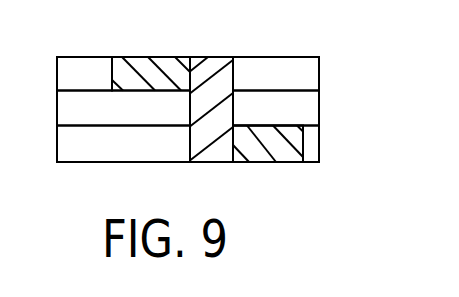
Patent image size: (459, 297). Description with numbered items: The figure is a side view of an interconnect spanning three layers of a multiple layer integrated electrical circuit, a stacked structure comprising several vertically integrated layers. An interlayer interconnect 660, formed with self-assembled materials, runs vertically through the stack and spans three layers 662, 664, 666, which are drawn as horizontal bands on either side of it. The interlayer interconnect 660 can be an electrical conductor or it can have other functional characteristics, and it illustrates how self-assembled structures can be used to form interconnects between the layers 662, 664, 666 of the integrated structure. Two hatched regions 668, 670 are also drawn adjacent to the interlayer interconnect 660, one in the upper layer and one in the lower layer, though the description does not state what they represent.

The interlayer interconnect 660 is at (205, 67).
The layer 662 is at (63, 68).
The layer 664 is at (298, 105).
The layer 666 is at (63, 142).
The upper hatched adhesive layer 668 is at (152, 30).
The lower hatched adhesive layer 670 is at (278, 150).